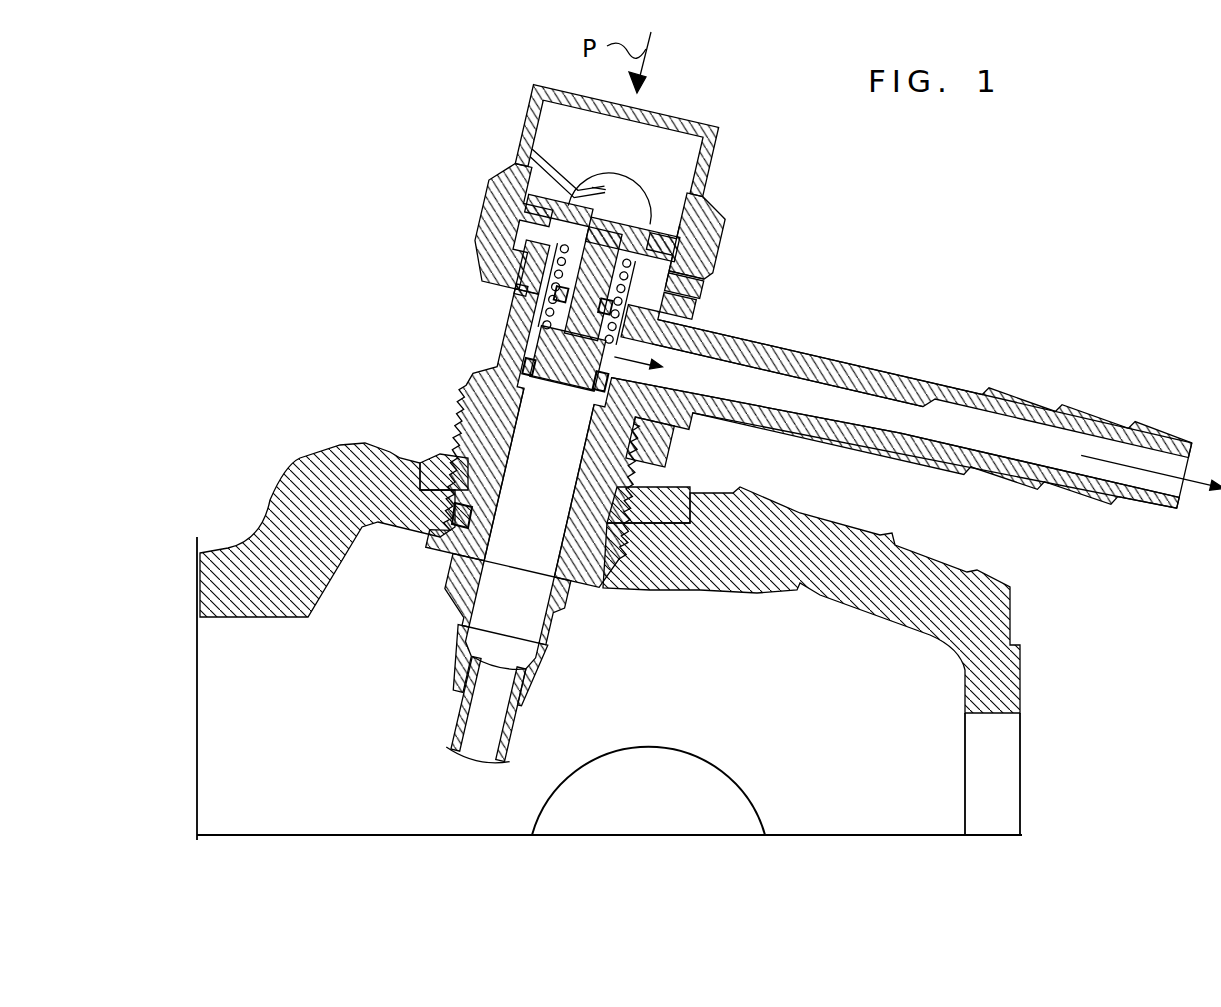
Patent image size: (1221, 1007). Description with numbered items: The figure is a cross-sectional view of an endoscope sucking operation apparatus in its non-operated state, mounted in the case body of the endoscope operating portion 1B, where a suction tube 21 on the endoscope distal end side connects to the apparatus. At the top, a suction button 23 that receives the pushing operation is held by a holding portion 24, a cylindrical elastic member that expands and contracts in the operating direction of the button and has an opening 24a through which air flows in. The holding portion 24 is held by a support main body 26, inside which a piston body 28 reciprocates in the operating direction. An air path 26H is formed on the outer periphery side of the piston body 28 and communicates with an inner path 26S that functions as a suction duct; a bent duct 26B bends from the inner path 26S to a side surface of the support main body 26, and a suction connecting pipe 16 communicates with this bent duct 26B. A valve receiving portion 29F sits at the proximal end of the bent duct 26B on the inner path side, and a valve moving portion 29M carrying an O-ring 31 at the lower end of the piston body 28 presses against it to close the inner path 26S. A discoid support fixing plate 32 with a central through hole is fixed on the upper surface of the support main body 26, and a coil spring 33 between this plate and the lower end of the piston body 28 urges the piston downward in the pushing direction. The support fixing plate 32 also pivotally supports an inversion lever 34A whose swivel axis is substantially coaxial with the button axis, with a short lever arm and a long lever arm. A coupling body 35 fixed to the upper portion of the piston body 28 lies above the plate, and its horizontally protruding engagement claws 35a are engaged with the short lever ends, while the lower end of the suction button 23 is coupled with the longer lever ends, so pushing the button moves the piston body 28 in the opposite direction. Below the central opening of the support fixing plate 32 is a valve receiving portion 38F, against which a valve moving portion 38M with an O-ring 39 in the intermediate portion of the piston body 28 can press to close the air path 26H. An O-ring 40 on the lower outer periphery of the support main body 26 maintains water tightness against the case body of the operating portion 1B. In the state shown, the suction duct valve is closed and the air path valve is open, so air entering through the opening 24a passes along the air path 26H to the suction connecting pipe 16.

The endoscope operating portion 1B is at (340, 447).
The suction connecting pipe 16 is at (873, 368).
The suction tube 21 is at (464, 713).
The suction button 23 is at (664, 109).
The holding portion 24 is at (720, 201).
The opening 24a is at (702, 242).
The support main body 26 is at (505, 343).
The bent duct 26B is at (736, 402).
The air path 26H is at (502, 256).
The inner path 26S is at (539, 482).
The piston body 28 is at (545, 337).
The valve receiving portion 29F is at (568, 395).
The valve moving portion 29M is at (480, 382).
The O-ring 31 is at (664, 428).
The support fixing plate 32 is at (525, 217).
The coil spring 33 is at (565, 299).
The inversion lever 34A is at (624, 180).
The coupling body 35 is at (494, 180).
The engagement claw 35a is at (513, 202).
The valve receiving portion 38F is at (686, 298).
The valve moving portion 38M is at (690, 316).
The O-ring 39 is at (512, 284).
The O-ring 40 is at (457, 510).